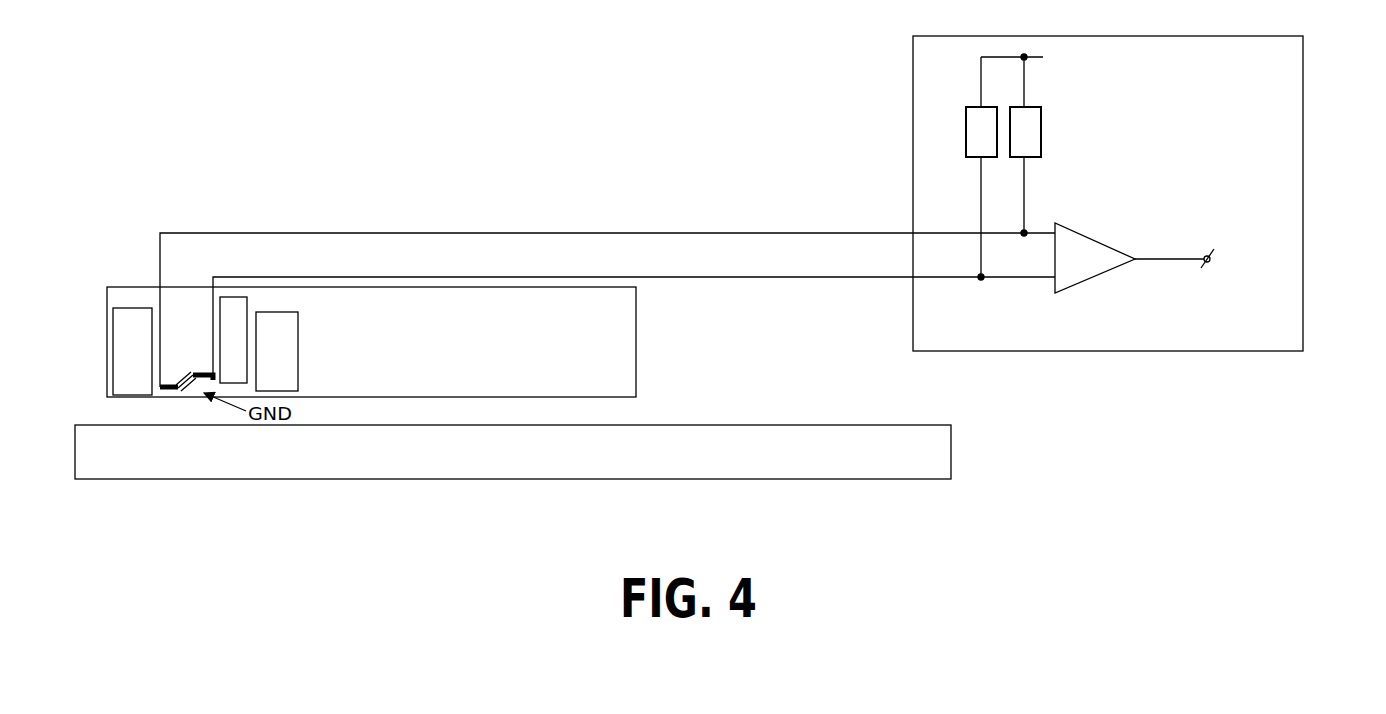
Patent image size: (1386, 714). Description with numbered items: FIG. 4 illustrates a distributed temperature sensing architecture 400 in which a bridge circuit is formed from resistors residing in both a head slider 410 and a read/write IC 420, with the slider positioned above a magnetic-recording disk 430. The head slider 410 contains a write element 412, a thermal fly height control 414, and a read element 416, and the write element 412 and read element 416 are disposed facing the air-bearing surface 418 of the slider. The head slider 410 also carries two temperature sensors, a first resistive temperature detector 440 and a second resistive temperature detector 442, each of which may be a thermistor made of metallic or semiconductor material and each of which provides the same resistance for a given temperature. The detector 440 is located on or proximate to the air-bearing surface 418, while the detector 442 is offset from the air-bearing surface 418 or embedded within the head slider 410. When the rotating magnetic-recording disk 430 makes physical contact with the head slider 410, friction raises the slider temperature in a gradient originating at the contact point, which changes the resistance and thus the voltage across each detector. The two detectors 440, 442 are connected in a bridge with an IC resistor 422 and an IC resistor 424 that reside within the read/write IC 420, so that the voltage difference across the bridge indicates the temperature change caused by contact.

The distributed temperature sensing architecture 400 is at (1167, 443).
The head slider 410 is at (637, 343).
The write element 412 is at (113, 335).
The thermal fly height control 414 is at (228, 297).
The read element 416 is at (279, 312).
The air-bearing surface 418 is at (612, 403).
The read/write IC 420 is at (1303, 130).
The IC resistor 422 is at (965, 118).
The IC resistor 424 is at (1041, 151).
The magnetic-recording disk 430 is at (952, 443).
The resistive temperature detector 440 is at (150, 399).
The resistive temperature detector 442 is at (222, 384).